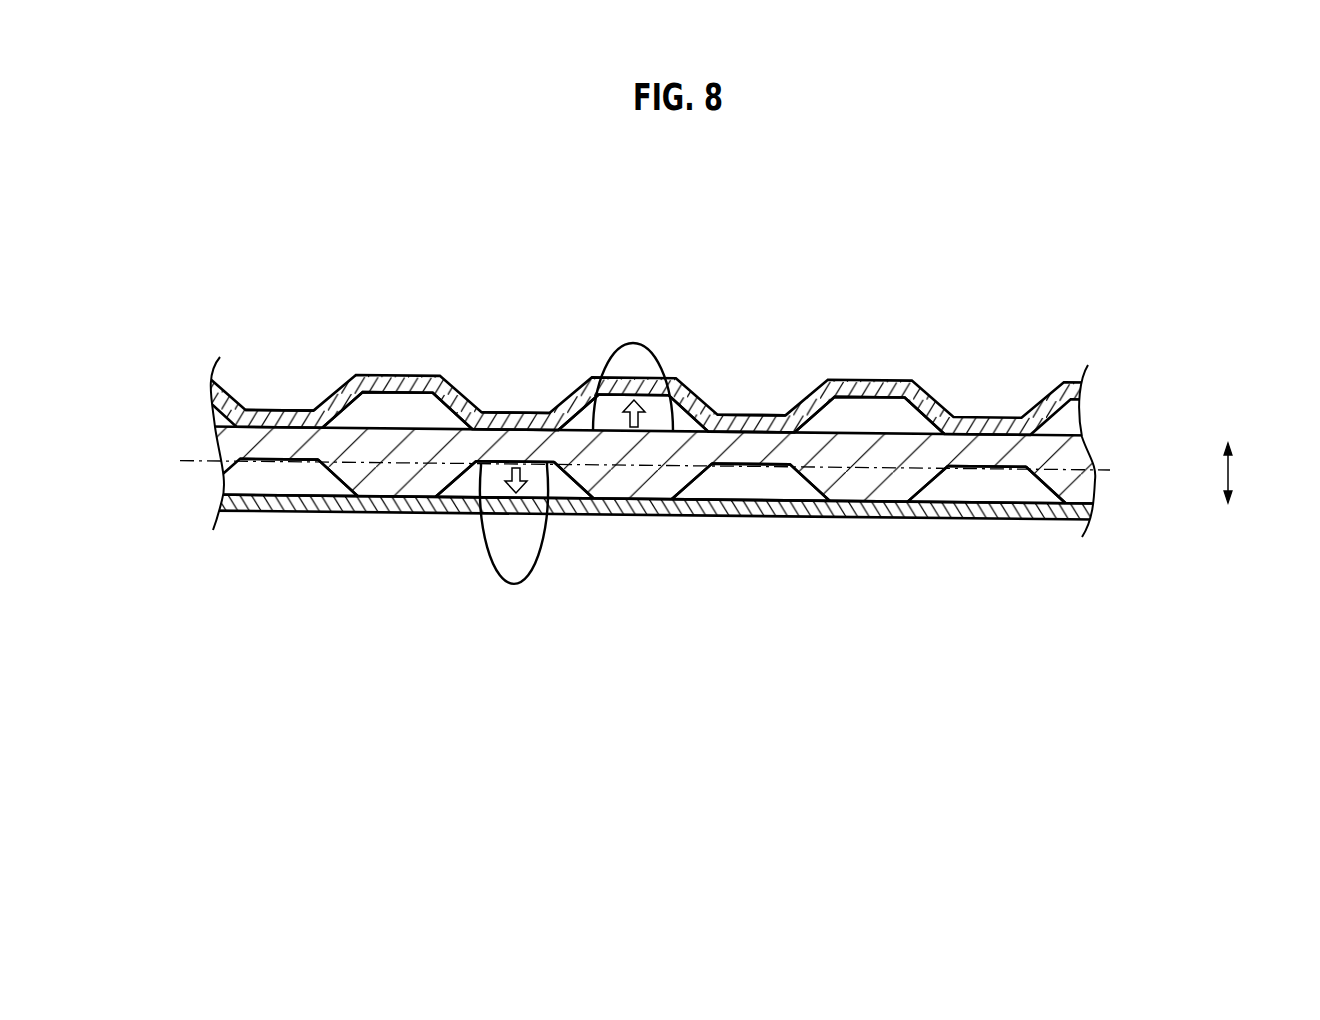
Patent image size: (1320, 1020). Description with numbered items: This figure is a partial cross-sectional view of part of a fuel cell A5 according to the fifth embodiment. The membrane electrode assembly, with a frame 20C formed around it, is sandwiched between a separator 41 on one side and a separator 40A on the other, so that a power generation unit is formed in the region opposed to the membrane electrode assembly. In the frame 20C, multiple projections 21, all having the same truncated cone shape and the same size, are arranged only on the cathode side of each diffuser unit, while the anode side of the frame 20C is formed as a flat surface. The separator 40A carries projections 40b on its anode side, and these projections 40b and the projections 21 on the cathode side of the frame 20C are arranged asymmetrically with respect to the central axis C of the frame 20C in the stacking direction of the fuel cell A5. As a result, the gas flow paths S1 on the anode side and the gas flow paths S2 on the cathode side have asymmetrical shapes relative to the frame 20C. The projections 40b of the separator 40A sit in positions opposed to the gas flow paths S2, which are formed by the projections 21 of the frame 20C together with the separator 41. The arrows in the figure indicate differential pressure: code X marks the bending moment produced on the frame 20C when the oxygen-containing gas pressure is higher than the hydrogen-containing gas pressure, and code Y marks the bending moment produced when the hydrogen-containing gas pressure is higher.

The fuel cell A5 is at (286, 332).
The separator 40A is at (455, 385).
The projections 40b is at (280, 420).
The gas flow paths S1 is at (400, 410).
The frame 20C is at (1081, 447).
The projections 21 is at (392, 480).
The gas flow paths S2 is at (272, 473).
The separator 41 is at (328, 515).
The central axis C is at (631, 462).
The bending moment X is at (647, 343).
The bending moment Y is at (528, 585).